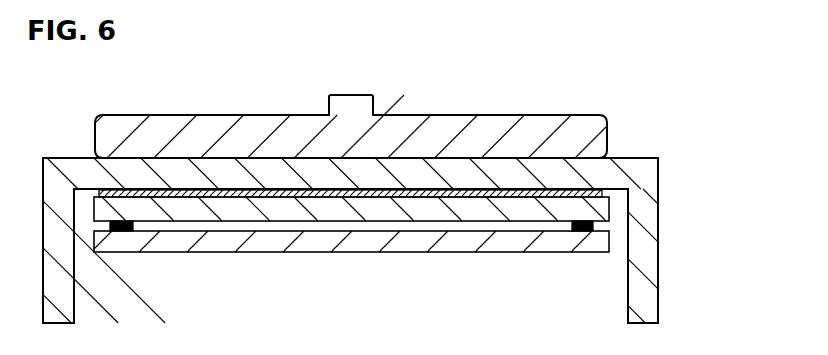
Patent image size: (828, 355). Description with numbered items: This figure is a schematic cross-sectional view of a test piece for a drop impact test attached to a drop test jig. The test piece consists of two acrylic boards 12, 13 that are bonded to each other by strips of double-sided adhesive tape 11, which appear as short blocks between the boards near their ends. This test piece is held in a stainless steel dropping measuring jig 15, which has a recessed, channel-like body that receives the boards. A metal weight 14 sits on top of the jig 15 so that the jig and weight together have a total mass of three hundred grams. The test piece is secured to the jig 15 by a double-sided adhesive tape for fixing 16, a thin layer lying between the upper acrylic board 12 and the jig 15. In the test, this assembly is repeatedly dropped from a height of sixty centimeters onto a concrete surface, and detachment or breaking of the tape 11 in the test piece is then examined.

The double-sided adhesive tape 11 is at (122, 232).
The acrylic board 12 is at (590, 210).
The acrylic board 13 is at (222, 240).
The weight 14 is at (389, 123).
The jig 15 is at (645, 278).
The double-sided adhesive tape for fixing 16 is at (612, 162).